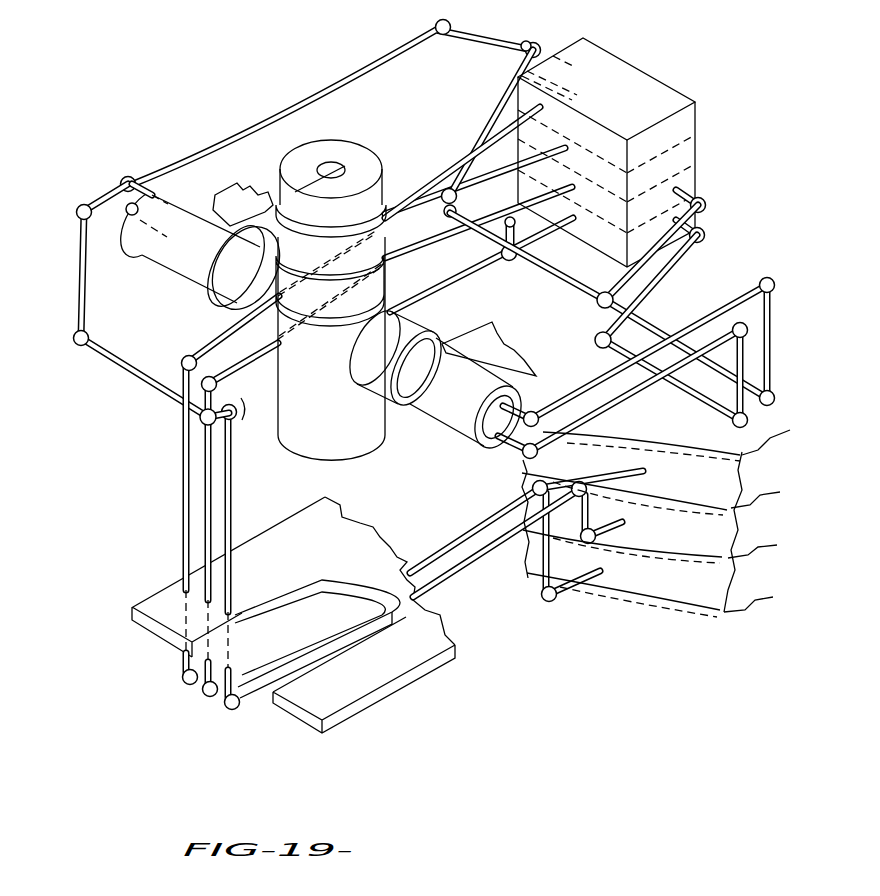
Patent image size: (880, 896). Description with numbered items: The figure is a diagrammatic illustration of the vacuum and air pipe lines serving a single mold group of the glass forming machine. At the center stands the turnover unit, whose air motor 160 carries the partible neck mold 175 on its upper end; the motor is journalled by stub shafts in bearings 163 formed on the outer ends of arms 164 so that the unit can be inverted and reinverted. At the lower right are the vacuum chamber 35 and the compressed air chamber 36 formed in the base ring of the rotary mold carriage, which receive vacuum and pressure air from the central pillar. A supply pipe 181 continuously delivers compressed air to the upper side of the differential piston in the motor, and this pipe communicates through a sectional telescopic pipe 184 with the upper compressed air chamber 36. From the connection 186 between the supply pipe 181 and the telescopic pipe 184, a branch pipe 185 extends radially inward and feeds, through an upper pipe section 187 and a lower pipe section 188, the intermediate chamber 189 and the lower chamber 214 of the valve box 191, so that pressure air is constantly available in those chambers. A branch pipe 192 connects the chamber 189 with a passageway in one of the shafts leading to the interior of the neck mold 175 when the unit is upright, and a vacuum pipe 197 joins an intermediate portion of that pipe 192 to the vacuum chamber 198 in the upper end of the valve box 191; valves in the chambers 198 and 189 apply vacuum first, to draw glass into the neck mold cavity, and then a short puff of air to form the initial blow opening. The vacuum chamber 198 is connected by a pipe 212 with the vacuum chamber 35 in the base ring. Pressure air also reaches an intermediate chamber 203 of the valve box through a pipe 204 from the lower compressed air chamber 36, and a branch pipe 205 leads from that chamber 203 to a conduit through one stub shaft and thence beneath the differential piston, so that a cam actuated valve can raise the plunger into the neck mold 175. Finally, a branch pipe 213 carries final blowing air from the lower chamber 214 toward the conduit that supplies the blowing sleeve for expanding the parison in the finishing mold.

The vacuum chamber 35 is at (700, 606).
The compressed air chamber 36 is at (697, 440).
The air motor 160 is at (297, 295).
The bearings 163 is at (458, 427).
The arms 164 is at (497, 330).
The neck mold 175 is at (345, 166).
The supply pipe 181 is at (80, 206).
The sectional telescopic pipe 184 is at (230, 515).
The branch pipe 185 is at (427, 290).
The connection 186 is at (199, 413).
The upper pipe section 187 is at (527, 214).
The lower pipe section 188 is at (540, 245).
The intermediate chamber 189 is at (690, 181).
The valve box 191 is at (592, 44).
The branch pipe 192 is at (652, 264).
The vacuum pipe 197 is at (496, 115).
The vacuum chamber 198 is at (583, 124).
The intermediate chamber 203 is at (688, 151).
The pipe 204 is at (408, 253).
The branch pipe 205 is at (325, 93).
The pipe 212 is at (444, 175).
The branch pipe 213 is at (634, 303).
The lower chamber 214 is at (618, 257).